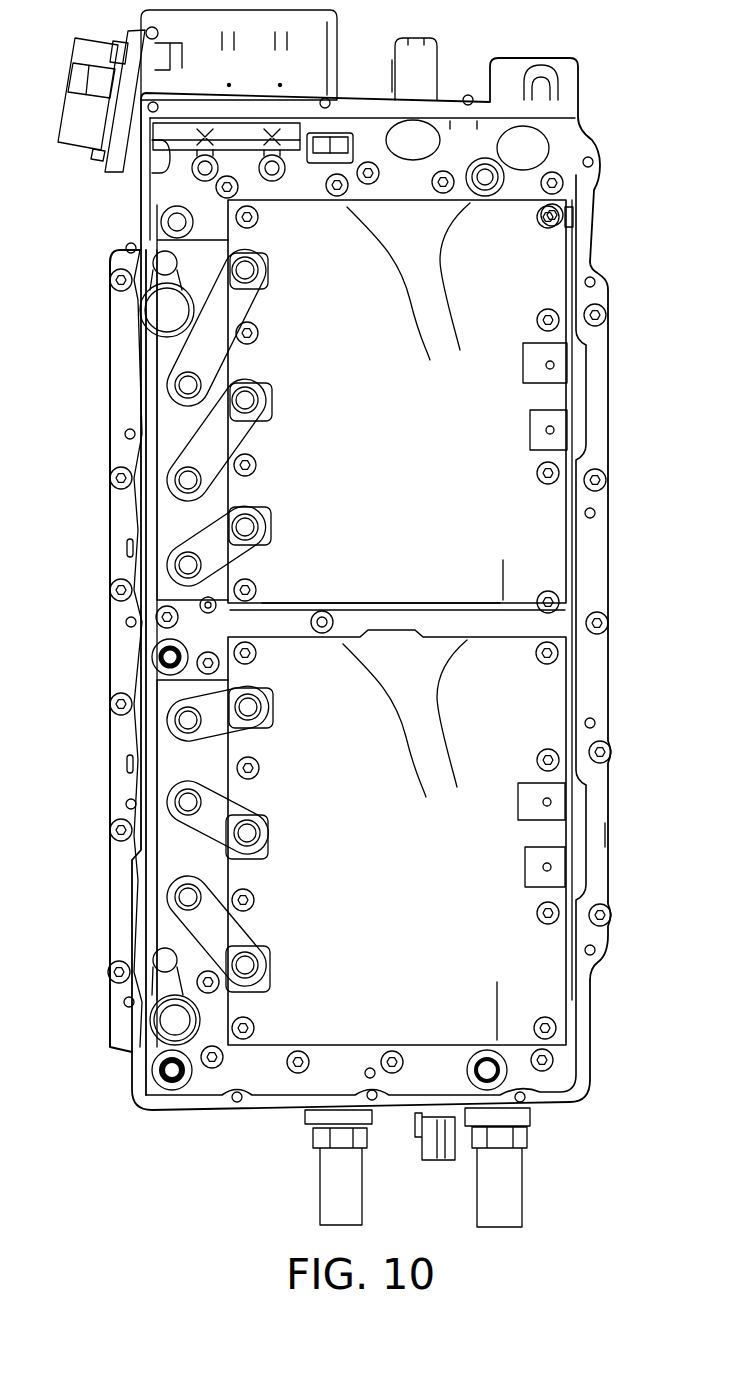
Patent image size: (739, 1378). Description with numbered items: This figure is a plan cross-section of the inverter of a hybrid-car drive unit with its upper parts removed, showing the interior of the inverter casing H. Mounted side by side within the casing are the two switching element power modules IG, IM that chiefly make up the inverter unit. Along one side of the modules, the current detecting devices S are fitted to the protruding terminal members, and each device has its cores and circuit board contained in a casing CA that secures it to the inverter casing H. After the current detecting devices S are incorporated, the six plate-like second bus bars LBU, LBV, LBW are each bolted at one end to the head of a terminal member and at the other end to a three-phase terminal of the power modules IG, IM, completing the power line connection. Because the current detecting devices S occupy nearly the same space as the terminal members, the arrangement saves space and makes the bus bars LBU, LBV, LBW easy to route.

The inverter casing H is at (576, 217).
The current detecting device S is at (160, 443).
The casing CA is at (154, 738).
The switching element power module IG is at (420, 426).
The switching element power module IM is at (412, 870).
The plate-like bus bar LBW is at (243, 300).
The plate-like bus bar LBV is at (265, 430).
The plate-like bus bar LBU is at (240, 550).